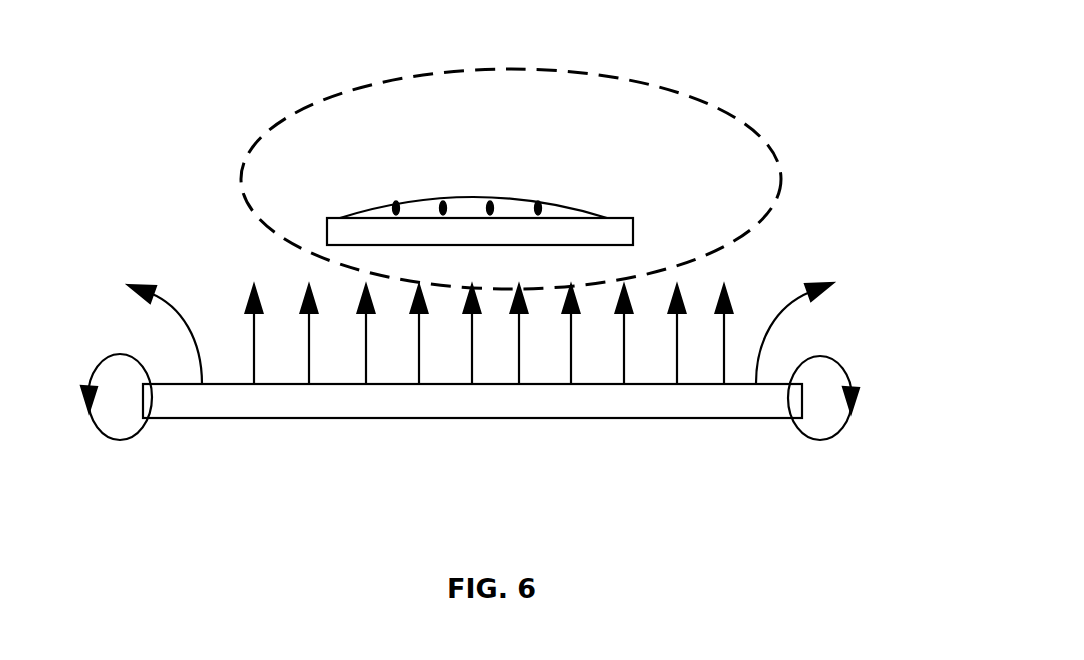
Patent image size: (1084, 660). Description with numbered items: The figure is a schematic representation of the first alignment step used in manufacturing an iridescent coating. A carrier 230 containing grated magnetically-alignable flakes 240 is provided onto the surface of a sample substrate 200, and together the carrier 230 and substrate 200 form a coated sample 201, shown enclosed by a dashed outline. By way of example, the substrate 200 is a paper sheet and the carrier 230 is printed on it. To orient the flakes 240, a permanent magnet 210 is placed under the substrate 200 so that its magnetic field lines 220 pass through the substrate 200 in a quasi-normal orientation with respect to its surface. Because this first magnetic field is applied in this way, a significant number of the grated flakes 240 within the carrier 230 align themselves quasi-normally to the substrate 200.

The sample substrate 200 is at (633, 229).
The coated sample 201 is at (781, 163).
The permanent magnet 210 is at (571, 418).
The magnetic field lines 220 is at (308, 300).
The carrier 230 is at (373, 212).
The grated magnetically-alignable flakes 240 is at (488, 209).